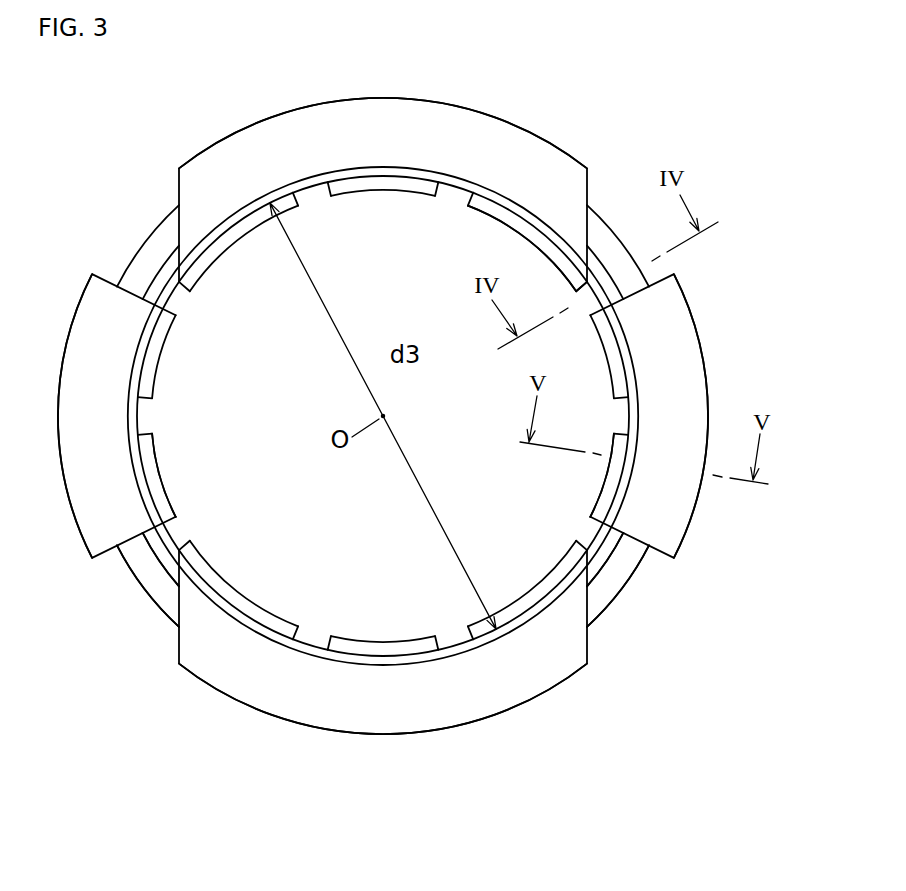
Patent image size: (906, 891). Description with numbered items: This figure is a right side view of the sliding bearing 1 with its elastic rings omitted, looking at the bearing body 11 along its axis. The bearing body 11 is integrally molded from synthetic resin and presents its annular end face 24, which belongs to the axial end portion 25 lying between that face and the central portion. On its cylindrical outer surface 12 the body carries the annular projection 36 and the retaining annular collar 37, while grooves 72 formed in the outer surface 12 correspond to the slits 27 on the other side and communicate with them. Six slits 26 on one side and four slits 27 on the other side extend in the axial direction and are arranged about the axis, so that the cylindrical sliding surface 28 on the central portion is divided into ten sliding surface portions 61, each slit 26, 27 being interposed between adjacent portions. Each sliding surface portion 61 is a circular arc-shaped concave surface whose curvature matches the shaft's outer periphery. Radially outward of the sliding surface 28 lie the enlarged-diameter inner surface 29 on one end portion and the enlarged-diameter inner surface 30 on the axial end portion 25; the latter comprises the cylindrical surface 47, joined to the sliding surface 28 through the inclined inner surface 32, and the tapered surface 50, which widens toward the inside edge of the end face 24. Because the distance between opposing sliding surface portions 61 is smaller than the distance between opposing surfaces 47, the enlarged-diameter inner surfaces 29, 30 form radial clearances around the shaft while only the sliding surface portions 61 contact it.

The sliding bearing 1 is at (524, 96).
The bearing body 11 is at (162, 593).
The outer surface 12 is at (600, 612).
The end face 24 is at (314, 665).
The axial end portion 25 is at (682, 345).
The slits 26 is at (311, 196).
The slits 27 is at (157, 292).
The sliding surface 28 is at (483, 239).
The enlarged-diameter inner surface 29 is at (175, 298).
The enlarged-diameter inner surface 30 is at (264, 628).
The inclined inner surface 32 is at (597, 498).
The annular projection 36 is at (480, 637).
The retaining annular collar 37 is at (207, 168).
The cylindrical surface 47 is at (153, 504).
The tapered surface 50 is at (414, 660).
The sliding surface portions 61 is at (407, 194).
The grooves 72 is at (165, 240).